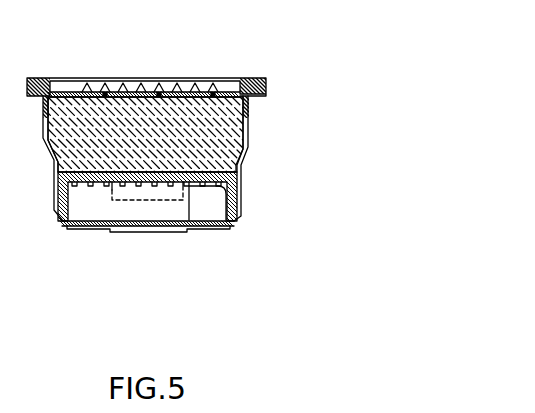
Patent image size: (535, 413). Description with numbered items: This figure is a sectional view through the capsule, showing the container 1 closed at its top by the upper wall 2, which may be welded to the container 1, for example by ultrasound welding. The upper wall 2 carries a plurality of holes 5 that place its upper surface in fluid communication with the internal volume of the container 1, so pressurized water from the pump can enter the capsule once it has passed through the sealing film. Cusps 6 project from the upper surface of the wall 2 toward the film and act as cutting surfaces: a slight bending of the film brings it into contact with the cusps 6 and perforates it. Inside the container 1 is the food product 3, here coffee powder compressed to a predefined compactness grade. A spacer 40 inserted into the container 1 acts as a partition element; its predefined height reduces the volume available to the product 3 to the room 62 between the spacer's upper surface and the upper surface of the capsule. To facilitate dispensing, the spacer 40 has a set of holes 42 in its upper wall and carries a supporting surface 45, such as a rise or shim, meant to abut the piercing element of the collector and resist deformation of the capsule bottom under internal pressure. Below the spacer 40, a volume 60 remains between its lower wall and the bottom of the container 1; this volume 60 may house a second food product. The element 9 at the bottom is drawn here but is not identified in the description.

The container 1 is at (247, 155).
The upper wall 2 is at (45, 78).
The food product 3 is at (78, 150).
The holes 5 is at (112, 90).
The cusps 6 is at (81, 93).
The bottom outlet plate 9 is at (163, 232).
The spacer 40 is at (53, 216).
The holes 42 is at (221, 224).
The supporting surface 45 is at (128, 192).
The volume 60 is at (207, 204).
The room 62 is at (157, 134).